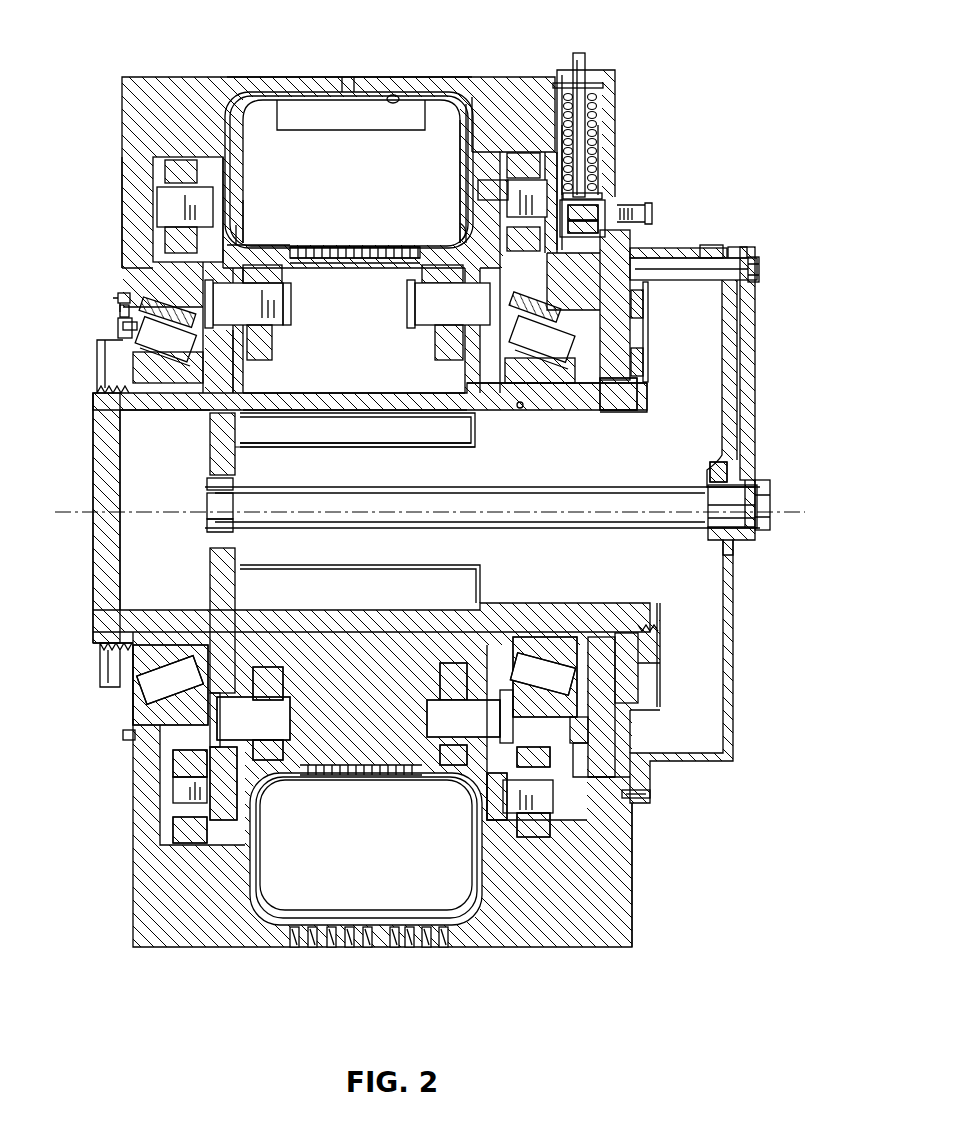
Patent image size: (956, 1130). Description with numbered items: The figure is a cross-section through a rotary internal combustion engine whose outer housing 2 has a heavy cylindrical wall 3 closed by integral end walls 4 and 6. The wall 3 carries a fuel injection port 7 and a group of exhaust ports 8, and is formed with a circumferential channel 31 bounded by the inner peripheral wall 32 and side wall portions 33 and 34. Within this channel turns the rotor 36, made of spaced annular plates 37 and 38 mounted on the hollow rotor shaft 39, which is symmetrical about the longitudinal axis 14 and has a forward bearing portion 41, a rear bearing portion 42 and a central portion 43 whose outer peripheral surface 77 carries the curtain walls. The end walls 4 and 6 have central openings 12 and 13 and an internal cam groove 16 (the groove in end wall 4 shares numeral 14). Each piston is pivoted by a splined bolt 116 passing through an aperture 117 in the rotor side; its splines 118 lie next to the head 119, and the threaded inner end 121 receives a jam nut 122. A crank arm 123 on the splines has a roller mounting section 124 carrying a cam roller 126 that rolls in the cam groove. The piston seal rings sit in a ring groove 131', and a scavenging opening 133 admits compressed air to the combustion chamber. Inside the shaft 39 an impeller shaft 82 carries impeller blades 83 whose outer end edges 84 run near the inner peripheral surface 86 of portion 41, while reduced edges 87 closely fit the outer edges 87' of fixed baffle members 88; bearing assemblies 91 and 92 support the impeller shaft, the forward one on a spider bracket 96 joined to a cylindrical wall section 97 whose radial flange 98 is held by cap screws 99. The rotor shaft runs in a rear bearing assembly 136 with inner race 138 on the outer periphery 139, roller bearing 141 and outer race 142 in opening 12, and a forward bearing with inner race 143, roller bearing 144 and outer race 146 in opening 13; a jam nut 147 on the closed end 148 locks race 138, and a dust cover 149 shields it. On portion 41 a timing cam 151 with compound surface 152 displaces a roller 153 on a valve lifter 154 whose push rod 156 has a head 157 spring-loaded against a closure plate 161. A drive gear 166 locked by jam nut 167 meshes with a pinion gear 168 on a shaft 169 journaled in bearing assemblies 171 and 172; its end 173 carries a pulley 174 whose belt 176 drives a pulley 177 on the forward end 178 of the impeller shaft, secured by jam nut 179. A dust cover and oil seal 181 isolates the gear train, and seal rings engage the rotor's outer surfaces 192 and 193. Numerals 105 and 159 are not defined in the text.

The outer housing 2 is at (265, 72).
The cylindrical wall 3 is at (313, 77).
The end wall 4 is at (135, 205).
The end wall 6 is at (573, 281).
The fuel injection port 7 is at (348, 78).
The exhaust ports 8 is at (330, 996).
The central opening 12 is at (112, 285).
The central opening 13 is at (604, 305).
The longitudinal axis 14 is at (160, 168).
The cam groove 16 is at (540, 263).
The circumferential channel 31 is at (263, 95).
The inner peripheral wall 32 is at (393, 94).
The side wall portion 33 is at (238, 153).
The side wall portion 34 is at (462, 135).
The rotor 36 is at (93, 568).
The annular plate member 37 is at (243, 218).
The annular plate member 38 is at (462, 185).
The rotor shaft 39 is at (640, 395).
The bearing portion 41 is at (560, 400).
The bearing portion 42 is at (180, 400).
The central portion 43 is at (345, 405).
The outer peripheral surface 77 is at (378, 400).
The impeller shaft 82 is at (605, 492).
The impeller blades 83 is at (538, 475).
The outer end edges 84 is at (515, 405).
The inner peripheral surface 86 is at (635, 398).
The outer edges 87 is at (355, 456).
The outer edges 87' is at (355, 431).
The fixed baffle members 88 is at (420, 438).
The bearing assembly 91 is at (212, 490).
The bearing assembly 92 is at (212, 452).
The bracket member 96 is at (728, 445).
The cylindrical wall section 97 is at (705, 762).
The radial flange 98 is at (640, 783).
The cap screws 99 is at (605, 782).
The fuel inlet chamber 105 is at (352, 117).
The splined bolt 116 is at (225, 310).
The aperture 117 is at (275, 345).
The splines 118 is at (212, 350).
The head 119 is at (167, 312).
The inner end 121 is at (283, 305).
The jam nut 122 is at (281, 280).
The crank arm 123 is at (238, 245).
The roller mounting section 124 is at (238, 168).
The cam roller 126 is at (243, 238).
The ring groove 131' is at (429, 227).
The opening 133 is at (357, 247).
The bearing assembly 136 is at (125, 340).
The inner race 138 is at (138, 380).
The outer periphery 139 is at (165, 643).
The roller bearing 141 is at (153, 352).
The outer race 142 is at (122, 307).
The inner race 143 is at (540, 374).
The roller bearing 144 is at (525, 350).
The outer race 146 is at (515, 322).
The jam nut 147 is at (115, 652).
The closed end 148 is at (102, 425).
The dust cover 149 is at (97, 355).
The timing cam 151 is at (605, 735).
The outer peripheral surface 152 is at (600, 800).
The roller 153 is at (598, 225).
The valve lifter 154 is at (600, 210).
The push rod 156 is at (585, 105).
The head 157 is at (600, 185).
The spring 159 is at (595, 135).
The closure plate 161 is at (585, 80).
The drive gear 166 is at (640, 328).
The jam nut 167 is at (640, 355).
The pinion gear 168 is at (640, 308).
The shaft 169 is at (680, 270).
The bearing assembly 171 is at (660, 255).
The bearing assembly 172 is at (718, 243).
The end 173 is at (742, 270).
The pulley 174 is at (750, 253).
The belt 176 is at (755, 330).
The pulley 177 is at (757, 475).
The forward end 178 is at (742, 512).
The jam nut 179 is at (770, 485).
The dust cover and oil seal 181 is at (645, 706).
The outer surface 192 is at (225, 165).
The outer surface 193 is at (477, 150).